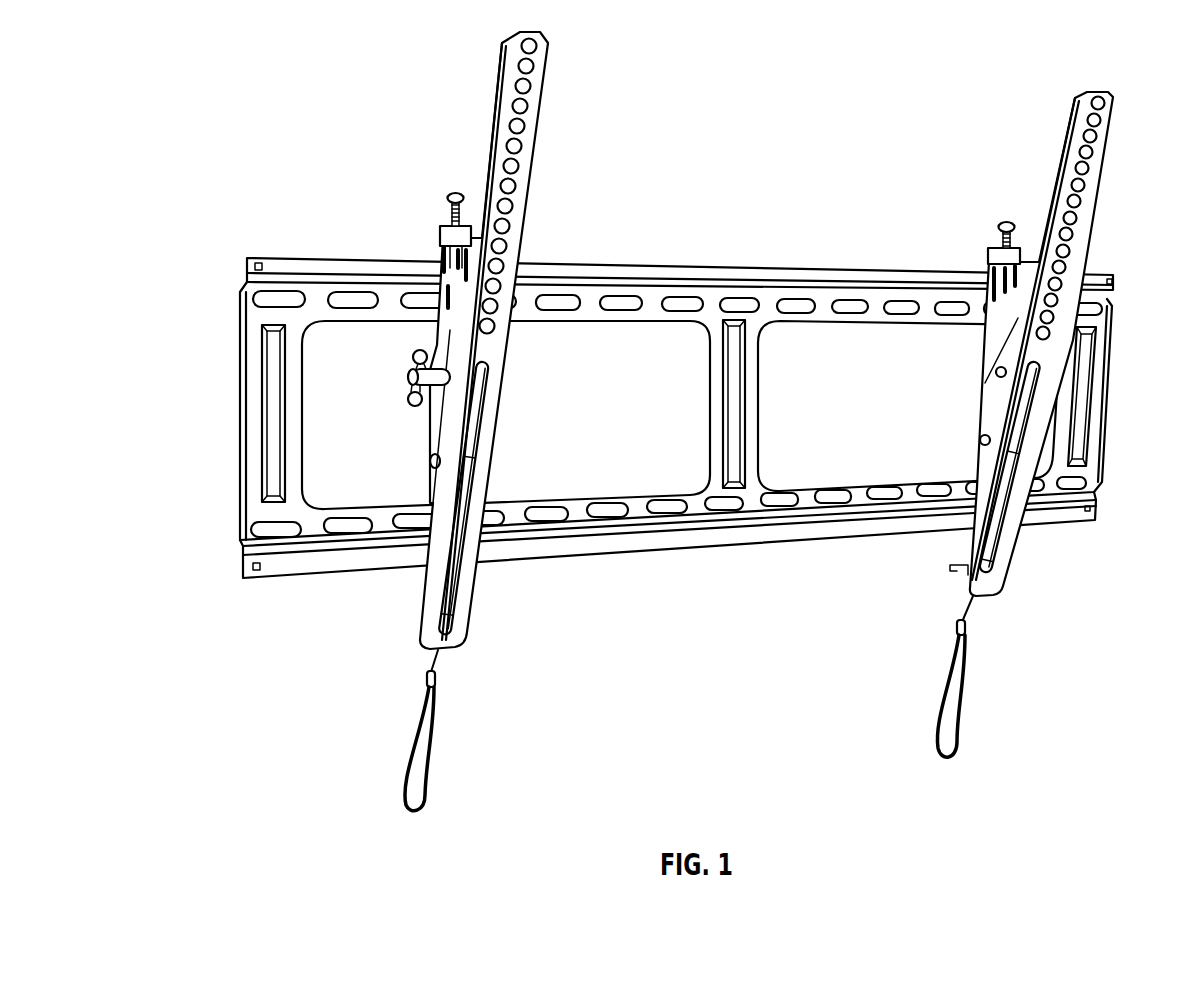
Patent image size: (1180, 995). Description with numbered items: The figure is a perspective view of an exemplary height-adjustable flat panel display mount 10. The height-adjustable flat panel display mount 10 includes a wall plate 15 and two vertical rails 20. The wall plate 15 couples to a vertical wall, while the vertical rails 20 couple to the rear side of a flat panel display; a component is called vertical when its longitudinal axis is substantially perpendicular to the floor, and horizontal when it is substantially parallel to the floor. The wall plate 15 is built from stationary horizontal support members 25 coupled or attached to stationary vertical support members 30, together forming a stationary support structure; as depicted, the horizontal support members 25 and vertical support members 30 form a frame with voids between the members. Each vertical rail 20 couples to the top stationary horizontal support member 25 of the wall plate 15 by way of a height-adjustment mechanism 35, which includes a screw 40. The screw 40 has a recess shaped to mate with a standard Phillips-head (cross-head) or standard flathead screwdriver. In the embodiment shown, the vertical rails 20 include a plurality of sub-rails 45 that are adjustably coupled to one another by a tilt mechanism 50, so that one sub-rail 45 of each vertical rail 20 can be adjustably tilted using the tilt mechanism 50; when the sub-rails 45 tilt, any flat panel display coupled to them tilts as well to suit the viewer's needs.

The height-adjustable flat panel display mount 10 is at (668, 421).
The wall plate 15 is at (668, 418).
The vertical rails 20 is at (775, 421).
The stationary horizontal support members 25 is at (884, 332).
The stationary vertical support members 30 is at (1118, 392).
The height-adjustment mechanism 35 is at (441, 237).
The screw 40 is at (985, 240).
The sub-rails 45 is at (520, 343).
The tilt mechanism 50 is at (411, 422).